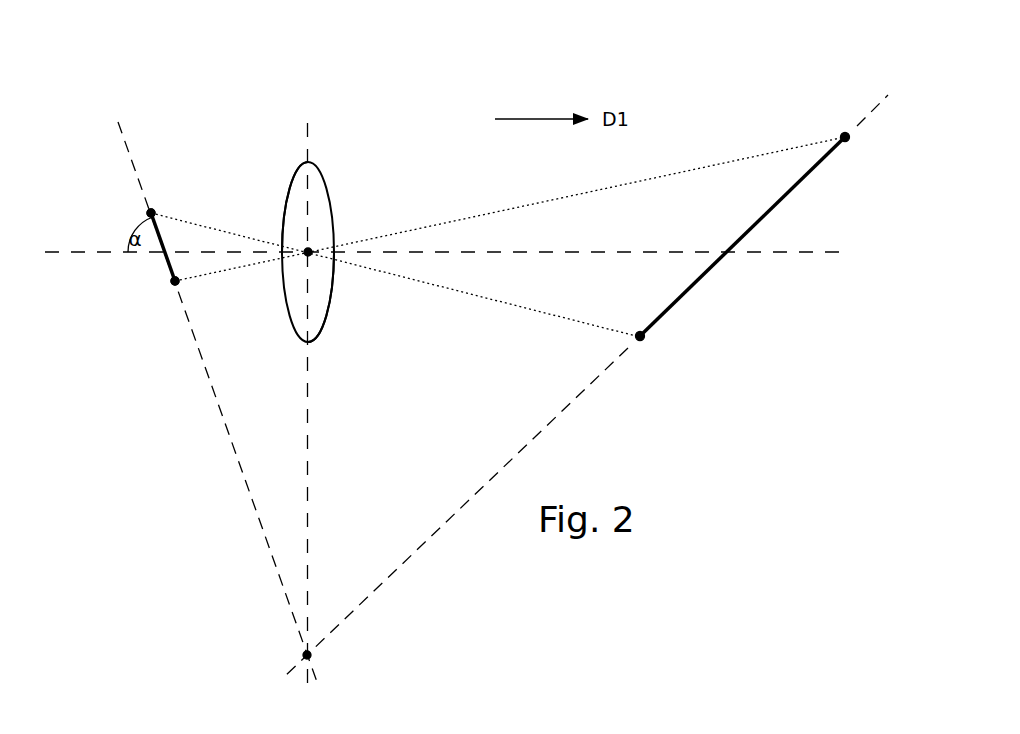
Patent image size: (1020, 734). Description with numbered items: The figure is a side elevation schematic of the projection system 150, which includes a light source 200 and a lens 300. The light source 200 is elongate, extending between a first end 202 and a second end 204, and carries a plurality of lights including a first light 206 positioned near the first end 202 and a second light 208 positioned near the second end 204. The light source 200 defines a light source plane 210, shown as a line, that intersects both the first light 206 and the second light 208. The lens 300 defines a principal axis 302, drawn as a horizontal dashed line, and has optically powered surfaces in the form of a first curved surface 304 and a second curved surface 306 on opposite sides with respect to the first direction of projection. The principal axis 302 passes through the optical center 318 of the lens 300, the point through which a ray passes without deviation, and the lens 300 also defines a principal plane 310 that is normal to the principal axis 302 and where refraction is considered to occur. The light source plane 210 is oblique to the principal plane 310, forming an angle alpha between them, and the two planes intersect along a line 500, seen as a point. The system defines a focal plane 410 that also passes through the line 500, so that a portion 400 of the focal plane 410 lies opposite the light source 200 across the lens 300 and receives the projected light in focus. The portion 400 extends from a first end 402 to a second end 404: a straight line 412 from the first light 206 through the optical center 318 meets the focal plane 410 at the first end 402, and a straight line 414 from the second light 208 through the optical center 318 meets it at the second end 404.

The projection system 150 is at (217, 77).
The light source 200 is at (167, 267).
The first end 202 is at (151, 213).
The second end 204 is at (175, 281).
The first light 206 is at (151, 213).
The second light 208 is at (175, 281).
The light source plane 210 is at (124, 133).
The lens 300 is at (320, 168).
The principal axis 302 is at (100, 252).
The first curved surface 304 is at (283, 232).
The second curved surface 306 is at (330, 297).
The principal plane 310 is at (308, 398).
The optical center 318 is at (310, 248).
The portion 400 is at (707, 277).
The first end 402 is at (640, 336).
The second end 404 is at (845, 137).
The focal plane 410 is at (282, 684).
The straight line 412 is at (530, 310).
The straight line 414 is at (513, 208).
The line 500 is at (307, 655).